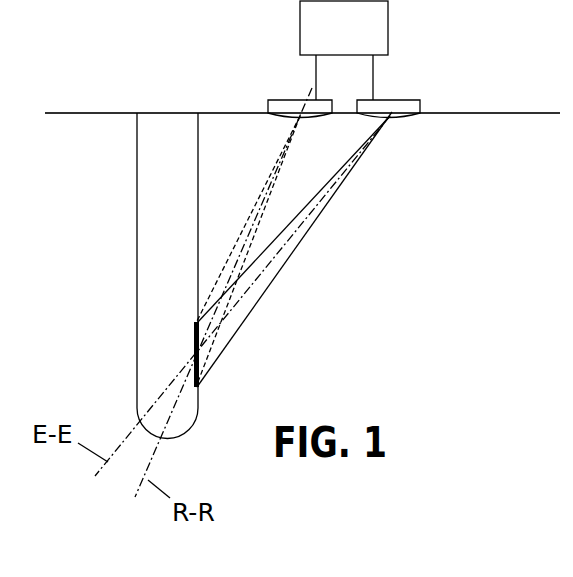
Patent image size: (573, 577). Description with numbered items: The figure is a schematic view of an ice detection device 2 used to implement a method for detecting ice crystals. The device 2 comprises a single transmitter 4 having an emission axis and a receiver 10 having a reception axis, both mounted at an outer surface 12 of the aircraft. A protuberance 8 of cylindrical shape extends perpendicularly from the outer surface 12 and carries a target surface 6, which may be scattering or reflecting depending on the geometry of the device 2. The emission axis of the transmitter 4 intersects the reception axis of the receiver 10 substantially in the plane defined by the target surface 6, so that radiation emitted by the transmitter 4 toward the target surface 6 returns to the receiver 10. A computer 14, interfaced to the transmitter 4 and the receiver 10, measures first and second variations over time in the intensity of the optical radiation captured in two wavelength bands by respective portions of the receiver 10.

The ice detection device 2 is at (380, 326).
The transmitter 4 is at (392, 110).
The target surface 6 is at (195, 355).
The protuberance 8 is at (155, 210).
The receiver 10 is at (283, 110).
The outer surface 12 is at (455, 132).
The computer 14 is at (344, 50).